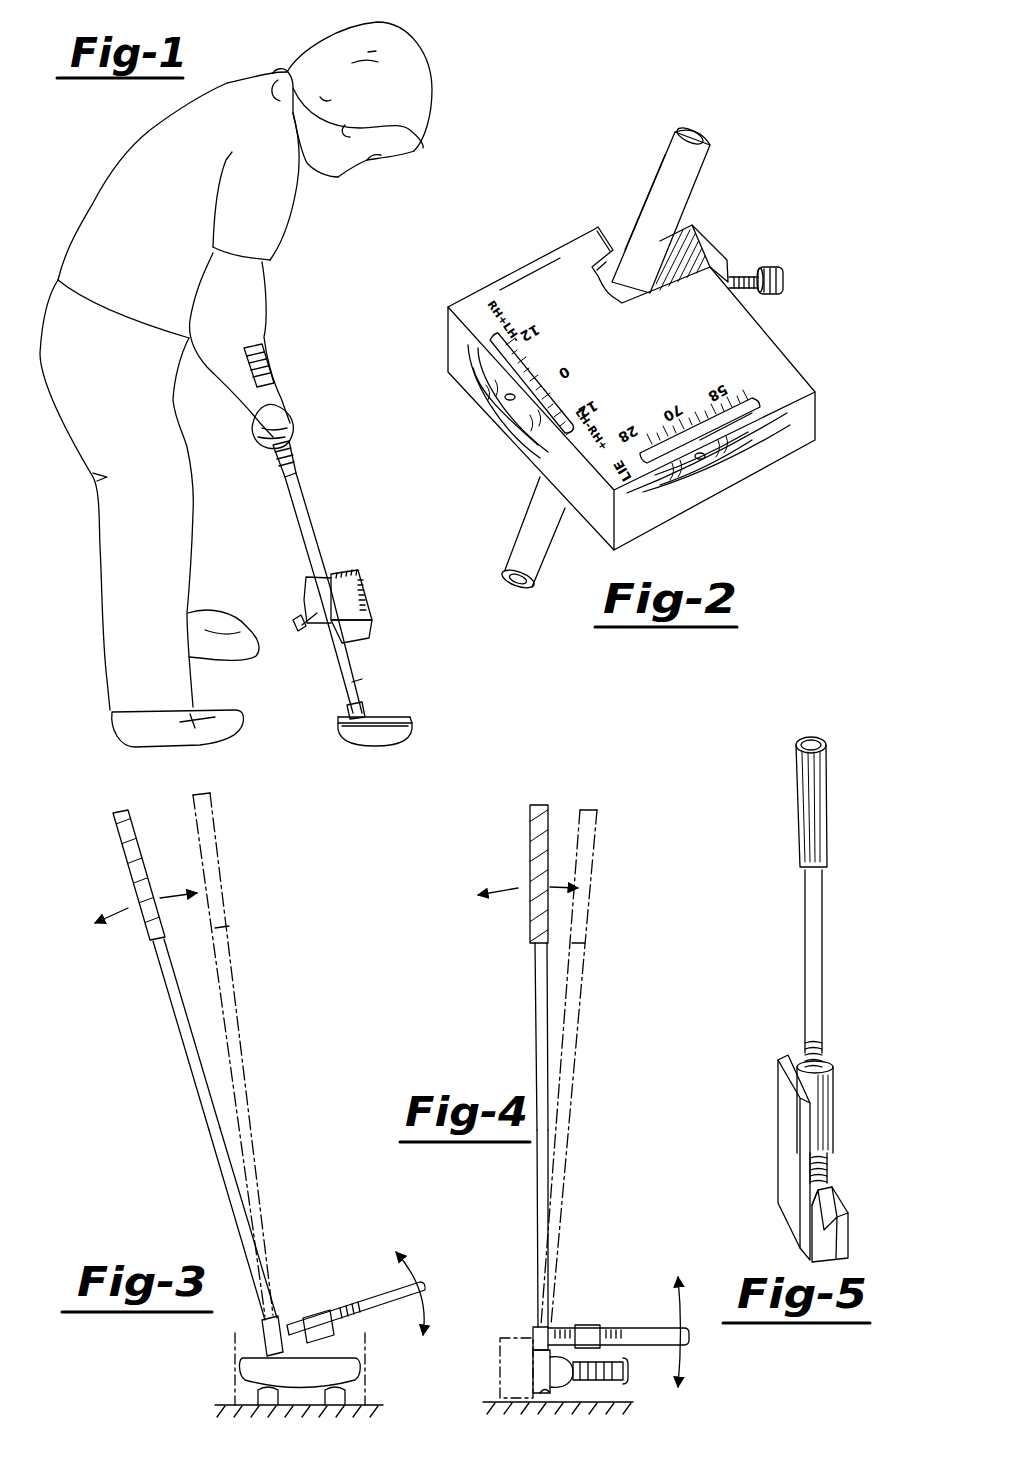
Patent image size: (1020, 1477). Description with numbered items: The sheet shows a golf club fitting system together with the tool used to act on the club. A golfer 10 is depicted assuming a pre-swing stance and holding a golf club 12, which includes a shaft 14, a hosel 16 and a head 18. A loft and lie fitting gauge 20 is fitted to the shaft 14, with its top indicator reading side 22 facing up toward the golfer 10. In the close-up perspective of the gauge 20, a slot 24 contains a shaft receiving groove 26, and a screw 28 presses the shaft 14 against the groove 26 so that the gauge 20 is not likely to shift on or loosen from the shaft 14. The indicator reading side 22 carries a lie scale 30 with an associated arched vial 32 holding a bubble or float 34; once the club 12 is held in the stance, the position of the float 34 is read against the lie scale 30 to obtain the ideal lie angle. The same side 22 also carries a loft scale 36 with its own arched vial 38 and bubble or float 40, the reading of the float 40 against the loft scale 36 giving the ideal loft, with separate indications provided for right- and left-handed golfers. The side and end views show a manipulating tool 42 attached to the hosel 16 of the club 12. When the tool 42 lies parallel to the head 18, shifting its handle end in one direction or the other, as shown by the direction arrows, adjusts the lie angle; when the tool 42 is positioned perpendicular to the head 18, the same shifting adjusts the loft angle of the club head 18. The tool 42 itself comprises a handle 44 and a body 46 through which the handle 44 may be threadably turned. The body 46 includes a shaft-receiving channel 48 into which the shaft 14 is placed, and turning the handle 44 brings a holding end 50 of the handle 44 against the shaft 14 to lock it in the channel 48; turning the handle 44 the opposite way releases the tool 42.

In FIG. 1, the golfer 10 is at (222, 107).
In FIG. 1, the golf club 12 is at (320, 550).
In FIG. 2, the golf club 12 is at (700, 165).
In FIG. 3, the golf club 12 is at (160, 970).
In FIG. 4, the golf club 12 is at (537, 970).
In FIG. 1, the shaft 14 is at (310, 517).
In FIG. 2, the shaft 14 is at (690, 210).
In FIG. 3, the shaft 14 is at (197, 1092).
In FIG. 4, the shaft 14 is at (538, 1015).
In FIG. 1, the hosel 16 is at (357, 700).
In FIG. 3, the hosel 16 is at (278, 1318).
In FIG. 4, the hosel 16 is at (548, 1317).
In FIG. 1, the head 18 is at (370, 732).
In FIG. 3, the head 18 is at (347, 1373).
In FIG. 4, the head 18 is at (533, 1367).
In FIG. 1, the loft and lie fitting gauge 20 is at (372, 614).
In FIG. 2, the loft and lie fitting gauge 20 is at (805, 420).
In FIG. 1, the top indicator reading side 22 is at (353, 572).
In FIG. 1, the slot 24 is at (320, 627).
In FIG. 2, the slot 24 is at (690, 250).
In FIG. 2, the shaft receiving groove 26 is at (628, 238).
In FIG. 2, the screw 28 is at (776, 268).
In FIG. 2, the lie scale 30 is at (778, 362).
In FIG. 2, the arched vial 32 is at (742, 442).
In FIG. 2, the bubble or float 34 is at (697, 462).
In FIG. 2, the loft scale 36 is at (537, 270).
In FIG. 2, the arched vial 38 is at (498, 380).
In FIG. 2, the bubble or float 40 is at (497, 395).
In FIG. 3, the manipulating tool 42 is at (362, 1313).
In FIG. 4, the manipulating tool 42 is at (637, 1333).
In FIG. 5, the manipulating tool 42 is at (828, 1120).
In FIG. 5, the handle 44 is at (817, 967).
In FIG. 5, the body 46 is at (837, 1248).
In FIG. 5, the shaft-receiving channel 48 is at (838, 1195).
In FIG. 5, the holding end 50 is at (828, 1173).